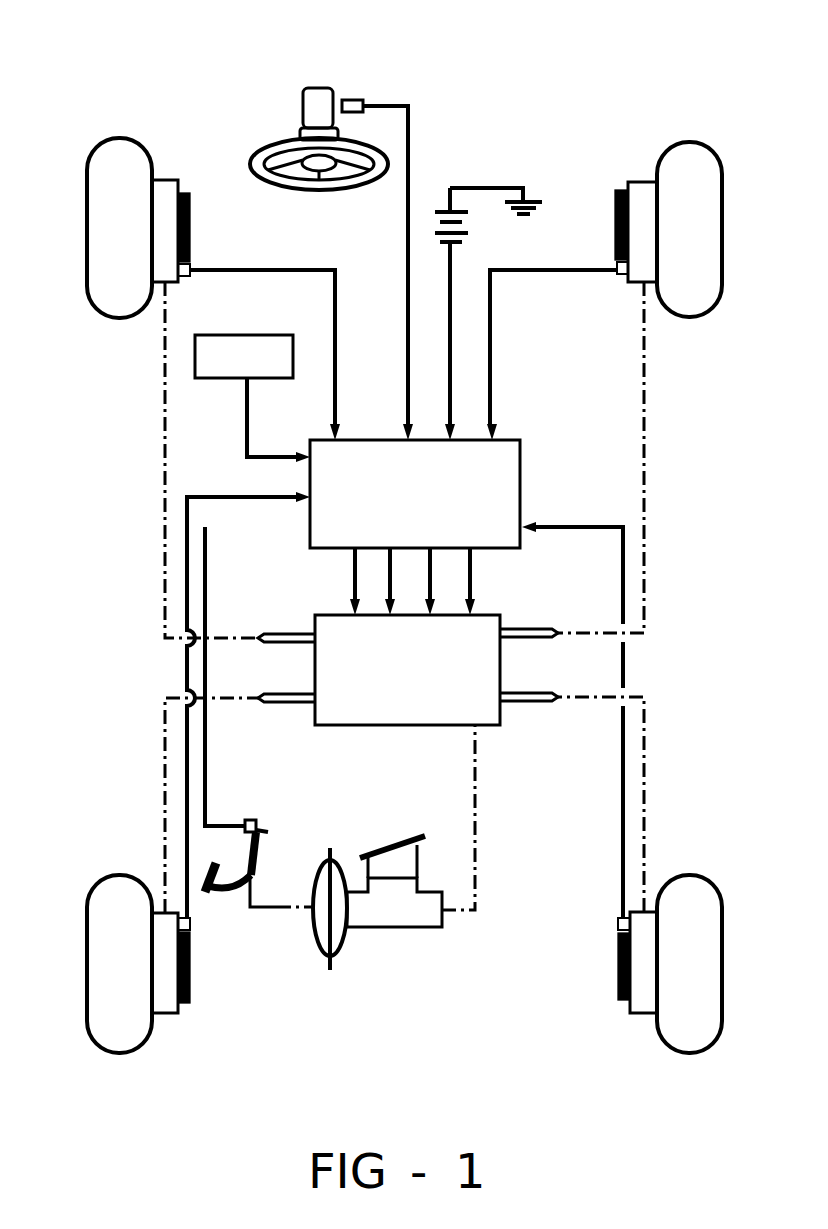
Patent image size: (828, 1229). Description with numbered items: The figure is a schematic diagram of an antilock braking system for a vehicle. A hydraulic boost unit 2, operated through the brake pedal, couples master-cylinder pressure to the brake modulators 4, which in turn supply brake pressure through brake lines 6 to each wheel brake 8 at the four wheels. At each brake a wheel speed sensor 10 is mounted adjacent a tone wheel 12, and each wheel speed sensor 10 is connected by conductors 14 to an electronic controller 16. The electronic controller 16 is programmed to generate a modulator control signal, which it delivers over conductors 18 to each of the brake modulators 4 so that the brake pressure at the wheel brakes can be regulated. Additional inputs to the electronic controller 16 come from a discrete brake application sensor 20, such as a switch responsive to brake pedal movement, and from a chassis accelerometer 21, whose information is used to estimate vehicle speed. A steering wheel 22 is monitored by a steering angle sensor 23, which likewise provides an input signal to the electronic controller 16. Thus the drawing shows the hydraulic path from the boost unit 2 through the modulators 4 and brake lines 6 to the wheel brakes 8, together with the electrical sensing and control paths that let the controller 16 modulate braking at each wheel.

The hydraulic boost unit 2 is at (393, 915).
The brake modulators 4 is at (315, 668).
The brake lines 6 is at (647, 535).
The wheel brake 8 is at (165, 190).
The wheel speed sensor 10 is at (190, 280).
The tone wheel 12 is at (190, 232).
The conductors 14 is at (272, 268).
The electronic controller 16 is at (522, 485).
The conductors 18 is at (383, 591).
The brake application sensor 20 is at (252, 818).
The chassis accelerometer 21 is at (225, 378).
The steering wheel 22 is at (264, 150).
The steering angle sensor 23 is at (356, 100).